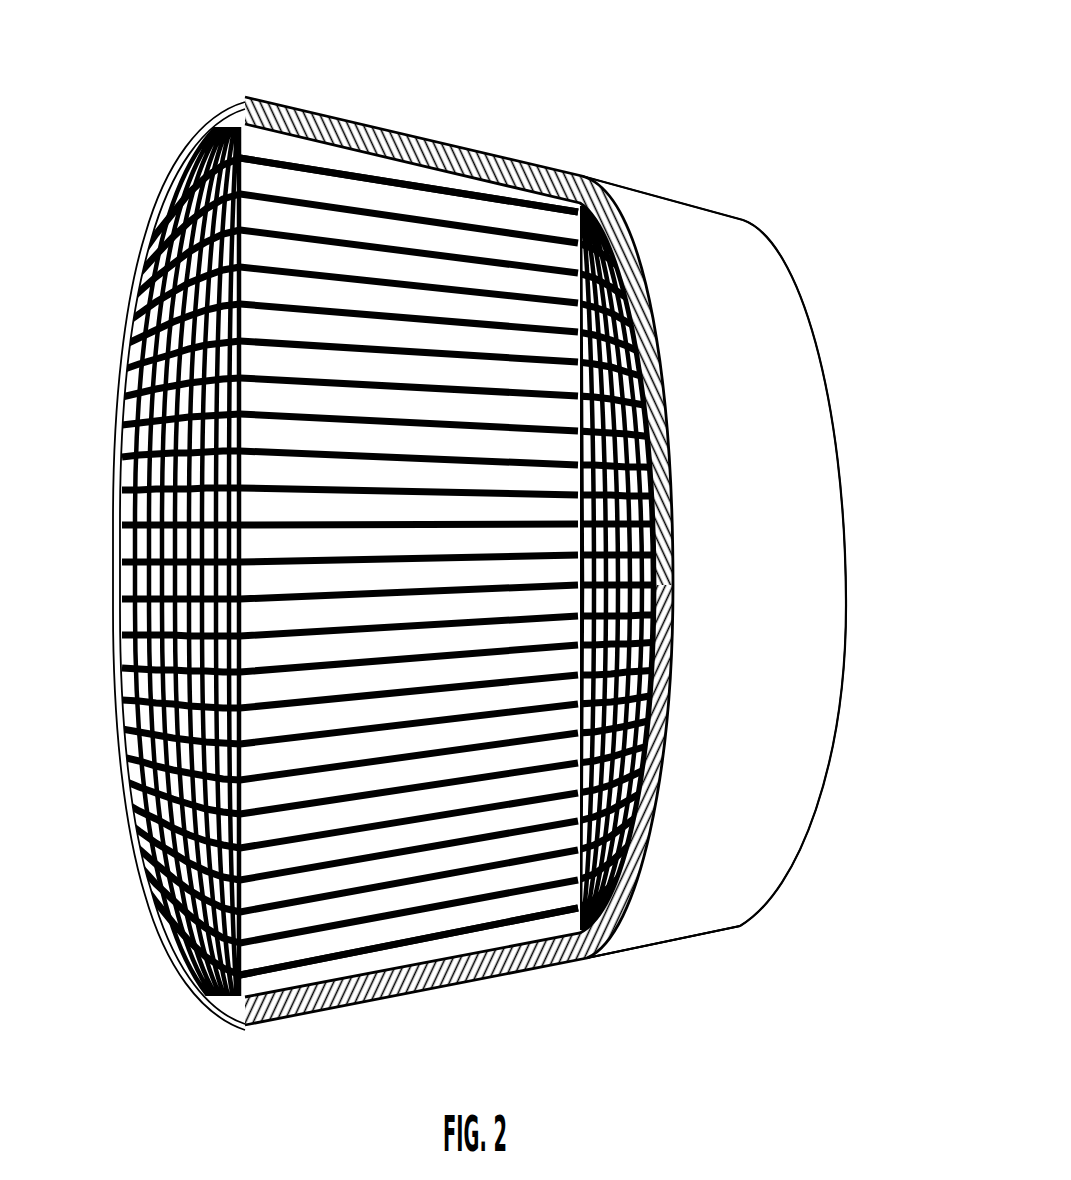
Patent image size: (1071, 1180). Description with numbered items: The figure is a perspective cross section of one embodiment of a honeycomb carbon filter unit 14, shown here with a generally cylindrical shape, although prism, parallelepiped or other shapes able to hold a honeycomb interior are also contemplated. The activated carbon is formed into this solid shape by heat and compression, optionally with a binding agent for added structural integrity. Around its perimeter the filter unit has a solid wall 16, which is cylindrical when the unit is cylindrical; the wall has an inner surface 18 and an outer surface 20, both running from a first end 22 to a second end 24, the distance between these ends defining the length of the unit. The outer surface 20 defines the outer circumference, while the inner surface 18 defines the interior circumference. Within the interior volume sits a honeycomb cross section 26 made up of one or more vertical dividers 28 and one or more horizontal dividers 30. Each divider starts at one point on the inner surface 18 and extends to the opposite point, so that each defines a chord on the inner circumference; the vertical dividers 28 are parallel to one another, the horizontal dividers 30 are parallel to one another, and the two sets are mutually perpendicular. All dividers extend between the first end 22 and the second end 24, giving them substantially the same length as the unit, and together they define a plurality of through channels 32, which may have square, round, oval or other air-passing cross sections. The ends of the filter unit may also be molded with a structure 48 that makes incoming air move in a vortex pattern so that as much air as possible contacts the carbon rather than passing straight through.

The honeycomb carbon filter unit 14 is at (666, 982).
The solid wall 16 is at (768, 388).
The inner surface 18 is at (340, 128).
The outer surface 20 is at (774, 649).
The first end 22 is at (238, 1040).
The second end 24 is at (741, 933).
The honeycomb cross section 26 is at (124, 379).
The vertical dividers 28 is at (250, 145).
The horizontal dividers 30 is at (232, 984).
The through channels 32 is at (160, 290).
The structure 48 is at (127, 615).